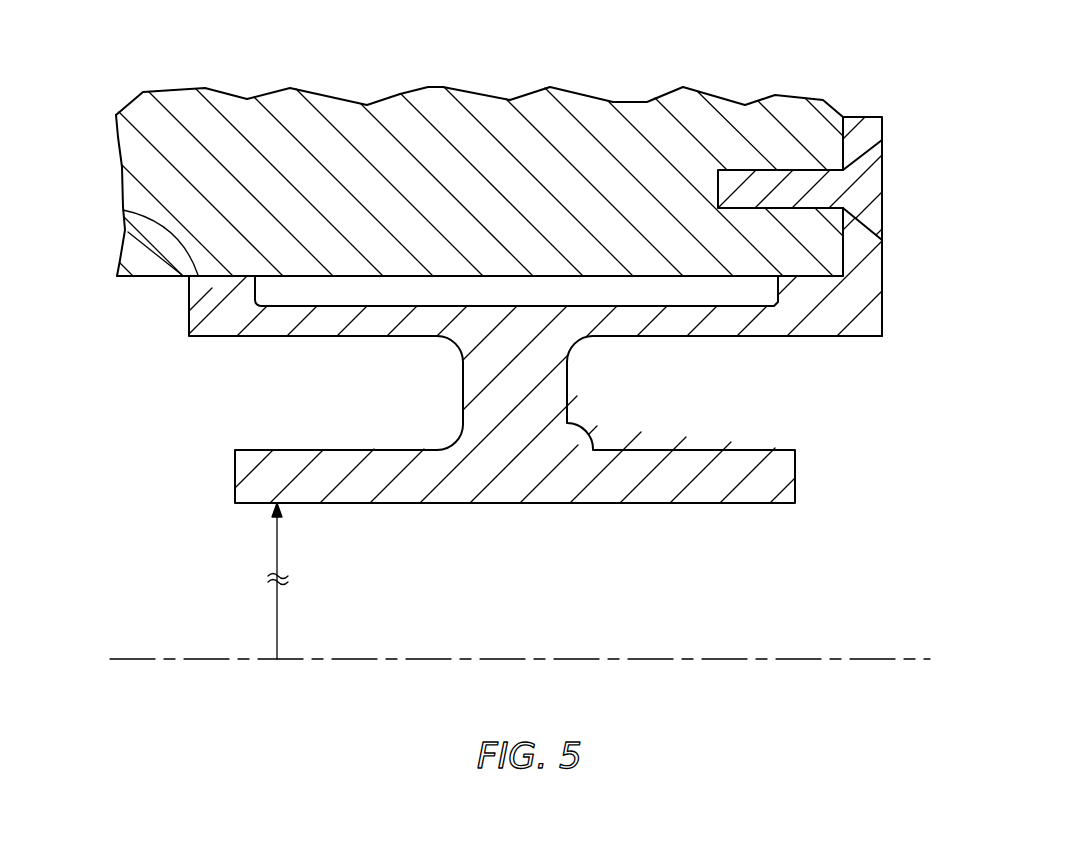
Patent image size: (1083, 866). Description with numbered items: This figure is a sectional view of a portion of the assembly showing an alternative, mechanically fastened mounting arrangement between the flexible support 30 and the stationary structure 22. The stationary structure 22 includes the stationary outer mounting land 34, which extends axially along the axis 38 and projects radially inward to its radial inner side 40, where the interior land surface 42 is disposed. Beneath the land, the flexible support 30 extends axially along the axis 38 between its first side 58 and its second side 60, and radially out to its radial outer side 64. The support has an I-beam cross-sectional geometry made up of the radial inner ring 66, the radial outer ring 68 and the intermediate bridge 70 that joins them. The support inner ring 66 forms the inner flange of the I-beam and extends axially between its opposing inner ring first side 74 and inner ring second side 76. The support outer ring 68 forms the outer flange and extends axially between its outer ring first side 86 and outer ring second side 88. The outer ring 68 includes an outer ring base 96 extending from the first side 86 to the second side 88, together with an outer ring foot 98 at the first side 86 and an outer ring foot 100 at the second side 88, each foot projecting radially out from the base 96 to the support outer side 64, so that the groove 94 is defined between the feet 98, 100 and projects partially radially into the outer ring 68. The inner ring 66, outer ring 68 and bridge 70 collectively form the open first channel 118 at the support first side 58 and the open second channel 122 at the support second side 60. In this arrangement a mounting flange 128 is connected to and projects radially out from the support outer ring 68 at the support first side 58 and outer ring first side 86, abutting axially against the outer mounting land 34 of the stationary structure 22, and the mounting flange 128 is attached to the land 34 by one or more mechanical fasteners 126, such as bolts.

The stationary structure 22 is at (832, 83).
The flexible support 30 is at (880, 435).
The outer mounting land 34 is at (777, 93).
The axis 38 is at (162, 660).
The radial inner side 40 is at (455, 293).
The interior land surface 42 is at (160, 278).
The first side 58 is at (811, 289).
The second side 60 is at (245, 325).
The radial outer side 64 is at (122, 208).
The radial inner ring 66 is at (220, 493).
The radial outer ring 68 is at (210, 353).
The intermediate bridge 70 is at (445, 408).
The inner ring first side 74 is at (795, 477).
The inner ring second side 76 is at (235, 477).
The outer ring first side 86 is at (883, 328).
The outer ring second side 88 is at (190, 320).
The groove 94 is at (516, 291).
The outer ring base 96 is at (667, 322).
The outer ring foot 98 is at (803, 294).
The outer ring foot 100 is at (213, 287).
The first channel 118 is at (723, 408).
The second channel 122 is at (318, 373).
The mechanical fastener 126 is at (882, 187).
The mounting flange 128 is at (867, 117).